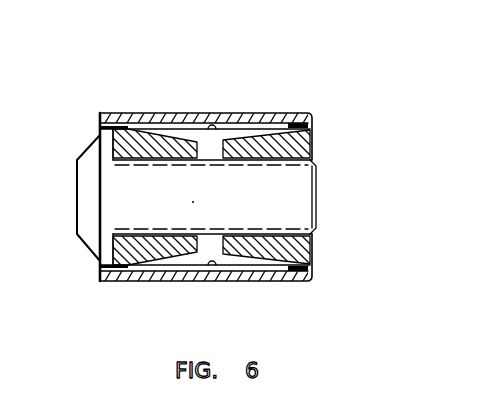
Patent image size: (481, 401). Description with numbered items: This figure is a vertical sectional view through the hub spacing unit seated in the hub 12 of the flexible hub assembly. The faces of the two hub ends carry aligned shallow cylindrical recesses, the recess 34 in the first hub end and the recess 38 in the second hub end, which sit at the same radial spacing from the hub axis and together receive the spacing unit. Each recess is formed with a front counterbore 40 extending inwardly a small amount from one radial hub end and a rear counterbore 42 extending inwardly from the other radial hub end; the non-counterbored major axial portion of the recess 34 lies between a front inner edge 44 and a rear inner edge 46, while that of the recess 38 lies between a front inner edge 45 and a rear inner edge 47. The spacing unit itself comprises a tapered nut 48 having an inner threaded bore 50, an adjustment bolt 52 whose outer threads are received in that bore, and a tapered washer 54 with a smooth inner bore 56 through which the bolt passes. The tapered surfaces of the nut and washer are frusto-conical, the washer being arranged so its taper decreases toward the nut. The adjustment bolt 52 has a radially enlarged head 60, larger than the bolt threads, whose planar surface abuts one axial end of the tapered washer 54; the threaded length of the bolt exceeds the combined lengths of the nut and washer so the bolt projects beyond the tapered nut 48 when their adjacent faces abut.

The hub 12 is at (0, 137).
The cylindrical recess 34 is at (228, 113).
The cylindrical recess 38 is at (213, 264).
The front counterbore 40 is at (100, 127).
The rear counterbore 42 is at (315, 128).
The front inner edge 44 is at (145, 113).
The front inner edge 45 is at (135, 281).
The rear inner edge 46 is at (290, 122).
The rear inner edge 47 is at (282, 281).
The tapered nut 48 is at (318, 128).
The inner threaded bore 50 is at (271, 161).
The adjustment bolt 52 is at (303, 198).
The tapered washer 54 is at (176, 112).
The smooth inner bore 56 is at (173, 159).
The radially enlarged head 60 is at (88, 237).